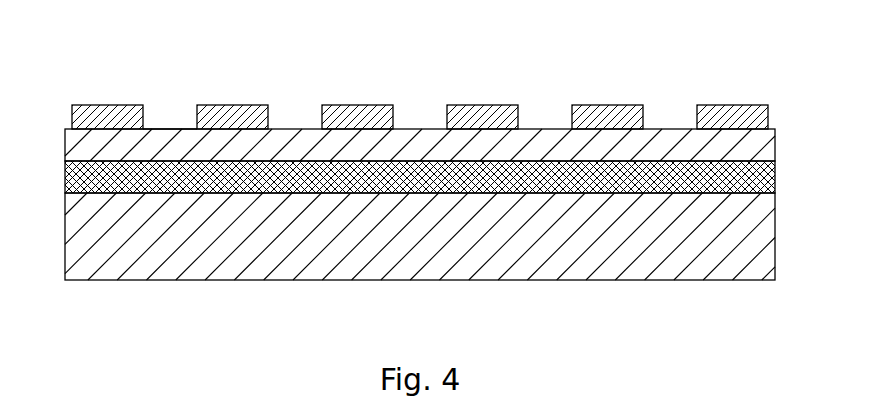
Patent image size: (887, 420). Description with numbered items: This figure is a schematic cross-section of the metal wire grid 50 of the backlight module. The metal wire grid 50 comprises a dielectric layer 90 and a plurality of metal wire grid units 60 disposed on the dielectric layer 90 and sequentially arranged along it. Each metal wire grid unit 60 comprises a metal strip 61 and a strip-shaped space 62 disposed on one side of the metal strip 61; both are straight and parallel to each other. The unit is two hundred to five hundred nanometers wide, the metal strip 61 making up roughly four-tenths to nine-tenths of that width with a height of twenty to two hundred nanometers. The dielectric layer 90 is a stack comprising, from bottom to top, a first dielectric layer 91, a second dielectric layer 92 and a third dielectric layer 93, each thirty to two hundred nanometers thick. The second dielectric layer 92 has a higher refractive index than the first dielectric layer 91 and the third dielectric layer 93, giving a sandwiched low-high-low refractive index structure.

The metal wire grid 50 is at (440, 144).
The metal wire grid unit 60 is at (420, 67).
The metal strip 61 is at (108, 115).
The strip-shaped space 62 is at (170, 89).
The dielectric layer 90 is at (465, 204).
The first dielectric layer 91 is at (748, 221).
The second dielectric layer 92 is at (748, 184).
The third dielectric layer 93 is at (443, 147).